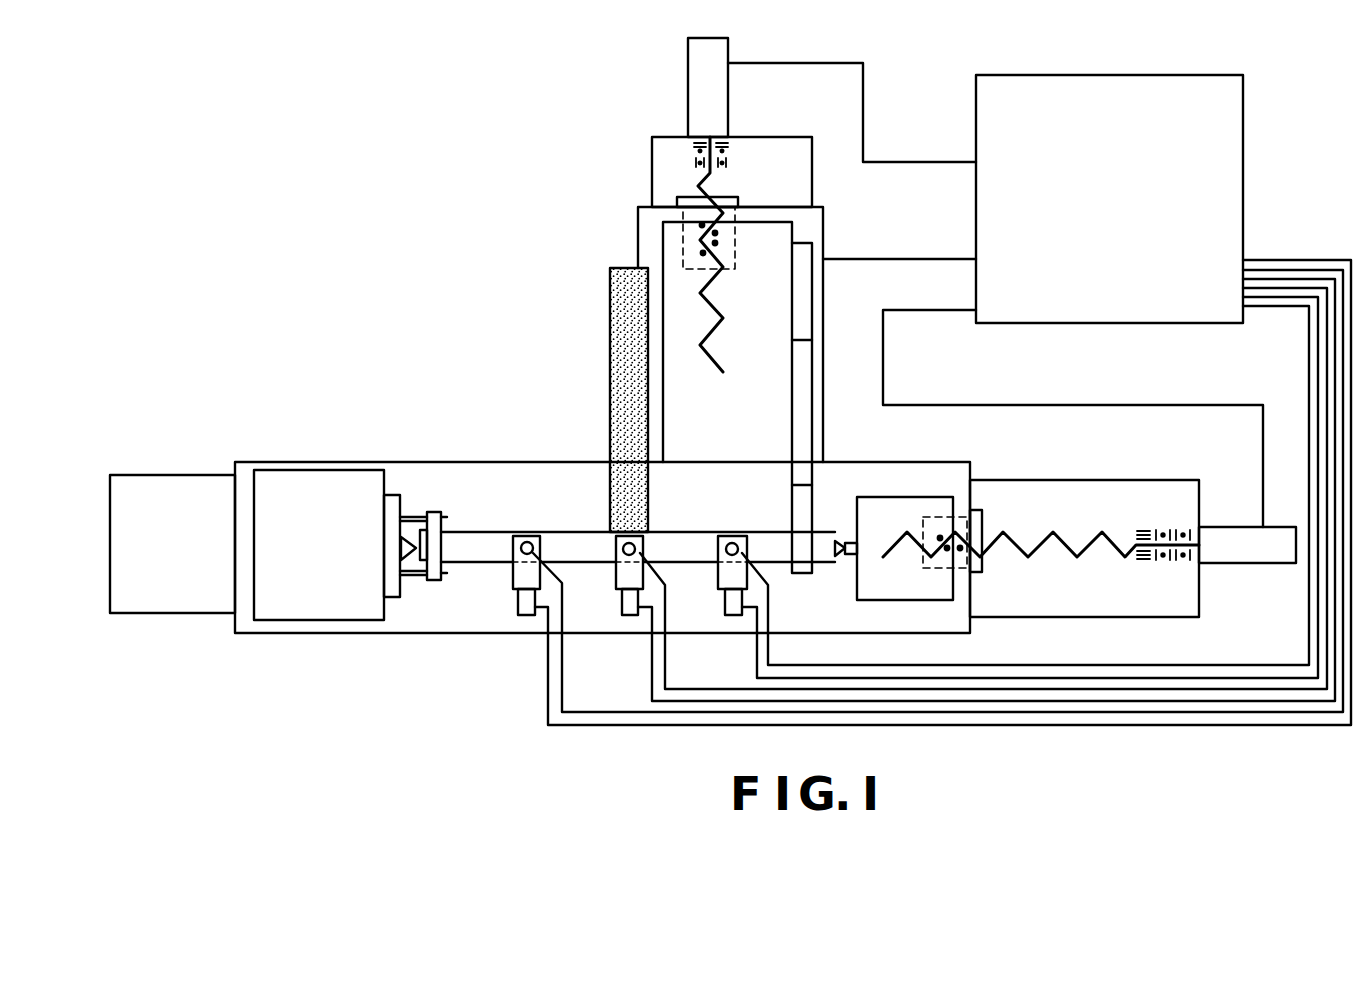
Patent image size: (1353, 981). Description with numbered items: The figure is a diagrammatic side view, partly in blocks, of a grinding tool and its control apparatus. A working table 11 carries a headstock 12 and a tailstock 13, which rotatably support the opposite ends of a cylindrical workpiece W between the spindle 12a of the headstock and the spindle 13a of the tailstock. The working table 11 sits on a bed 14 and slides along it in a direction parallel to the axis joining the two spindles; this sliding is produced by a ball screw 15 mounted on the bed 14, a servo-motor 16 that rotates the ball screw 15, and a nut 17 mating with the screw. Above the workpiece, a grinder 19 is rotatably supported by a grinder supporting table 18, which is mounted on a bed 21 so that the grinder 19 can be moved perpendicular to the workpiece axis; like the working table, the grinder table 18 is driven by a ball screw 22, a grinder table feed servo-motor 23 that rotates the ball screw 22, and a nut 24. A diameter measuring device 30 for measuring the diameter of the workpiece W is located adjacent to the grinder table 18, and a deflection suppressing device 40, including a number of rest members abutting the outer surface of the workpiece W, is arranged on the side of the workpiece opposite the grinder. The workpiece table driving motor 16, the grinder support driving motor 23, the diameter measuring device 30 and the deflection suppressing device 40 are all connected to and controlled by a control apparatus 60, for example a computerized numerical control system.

The working table 11 is at (845, 462).
The headstock 12 is at (311, 470).
The spindle of the headstock 12a is at (408, 572).
The cylindrical workpiece W is at (484, 531).
The tailstock 13 is at (908, 497).
The spindle of the tailstock 13a is at (841, 572).
The bed 14 is at (1075, 604).
The ball screw 15 is at (1067, 545).
The servo-motor for sliding the working table 16 is at (1253, 559).
The nut 17 is at (945, 569).
The grinder supporting table 18 is at (783, 232).
The grinder 19 is at (610, 325).
The bed 21 is at (823, 230).
The ball screw 22 is at (723, 330).
The grinder table feed servo-motor 23 is at (688, 80).
The nut 24 is at (735, 250).
The diameter measuring device 30 is at (806, 390).
The deflection suppressing device 40 is at (513, 583).
The control apparatus 60 is at (1243, 148).